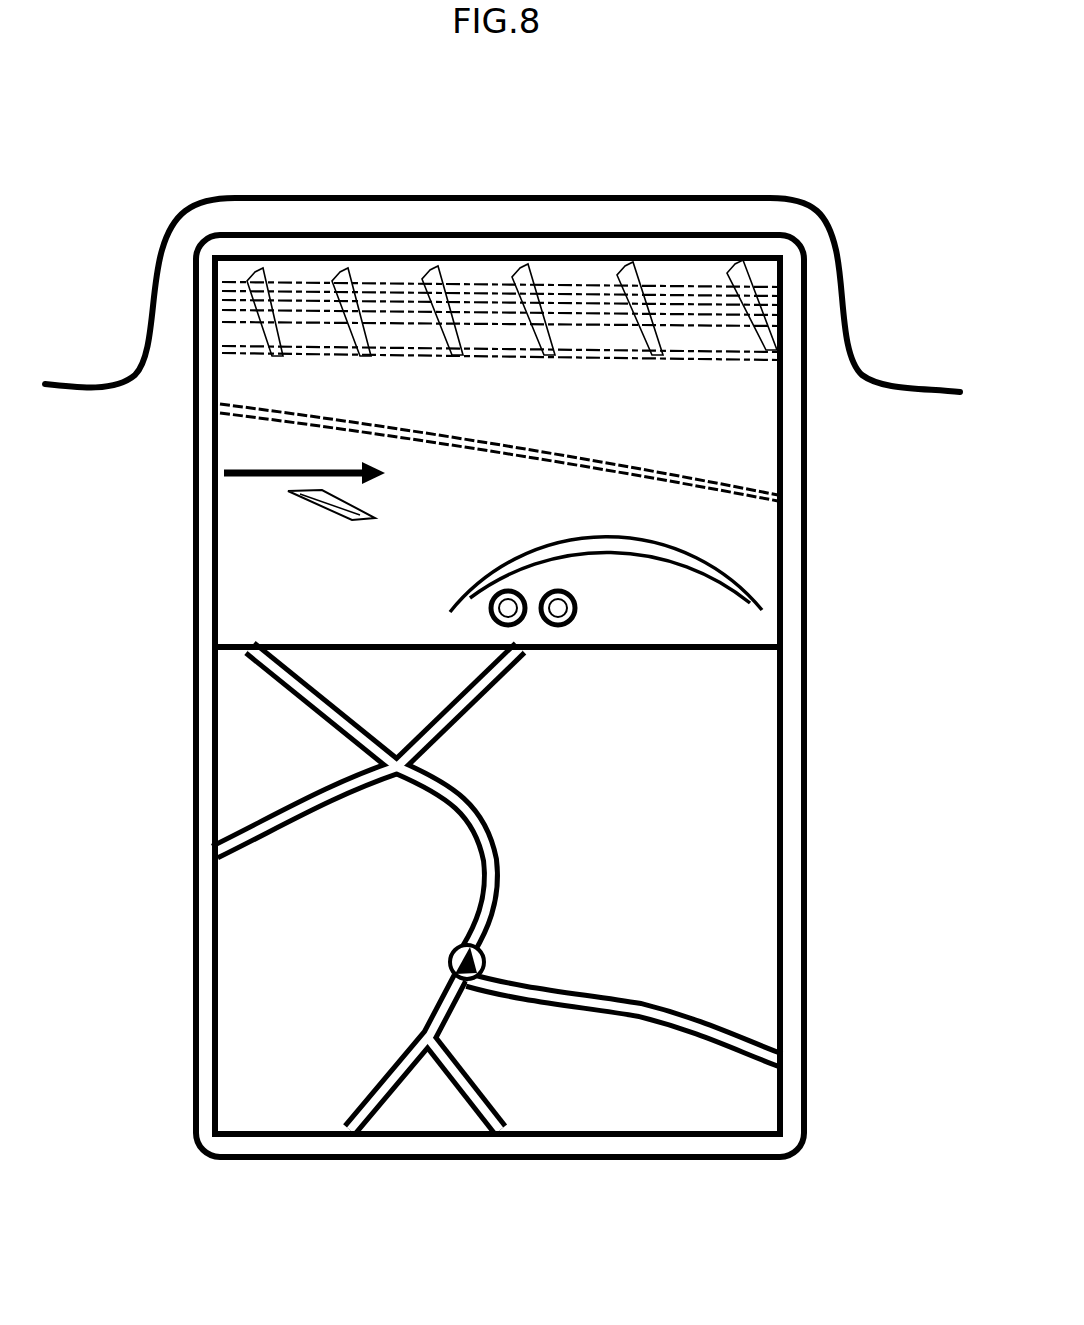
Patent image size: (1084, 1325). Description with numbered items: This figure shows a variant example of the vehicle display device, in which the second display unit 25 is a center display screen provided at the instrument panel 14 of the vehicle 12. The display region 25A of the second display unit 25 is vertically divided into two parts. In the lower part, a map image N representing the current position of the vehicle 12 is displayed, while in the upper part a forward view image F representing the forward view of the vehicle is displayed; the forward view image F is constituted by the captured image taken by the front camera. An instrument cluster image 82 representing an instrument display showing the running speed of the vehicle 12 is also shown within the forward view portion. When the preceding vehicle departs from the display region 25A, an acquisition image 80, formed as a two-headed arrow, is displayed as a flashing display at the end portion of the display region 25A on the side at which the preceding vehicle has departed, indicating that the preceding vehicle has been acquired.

The vehicle 12 is at (731, 113).
The instrument panel 14 is at (883, 383).
The second display unit 25 is at (405, 221).
The image display region 25A is at (735, 431).
The forward view image F is at (747, 531).
The instrument cluster image 82 is at (740, 617).
The acquisition image 80 is at (245, 473).
The map image N is at (748, 856).